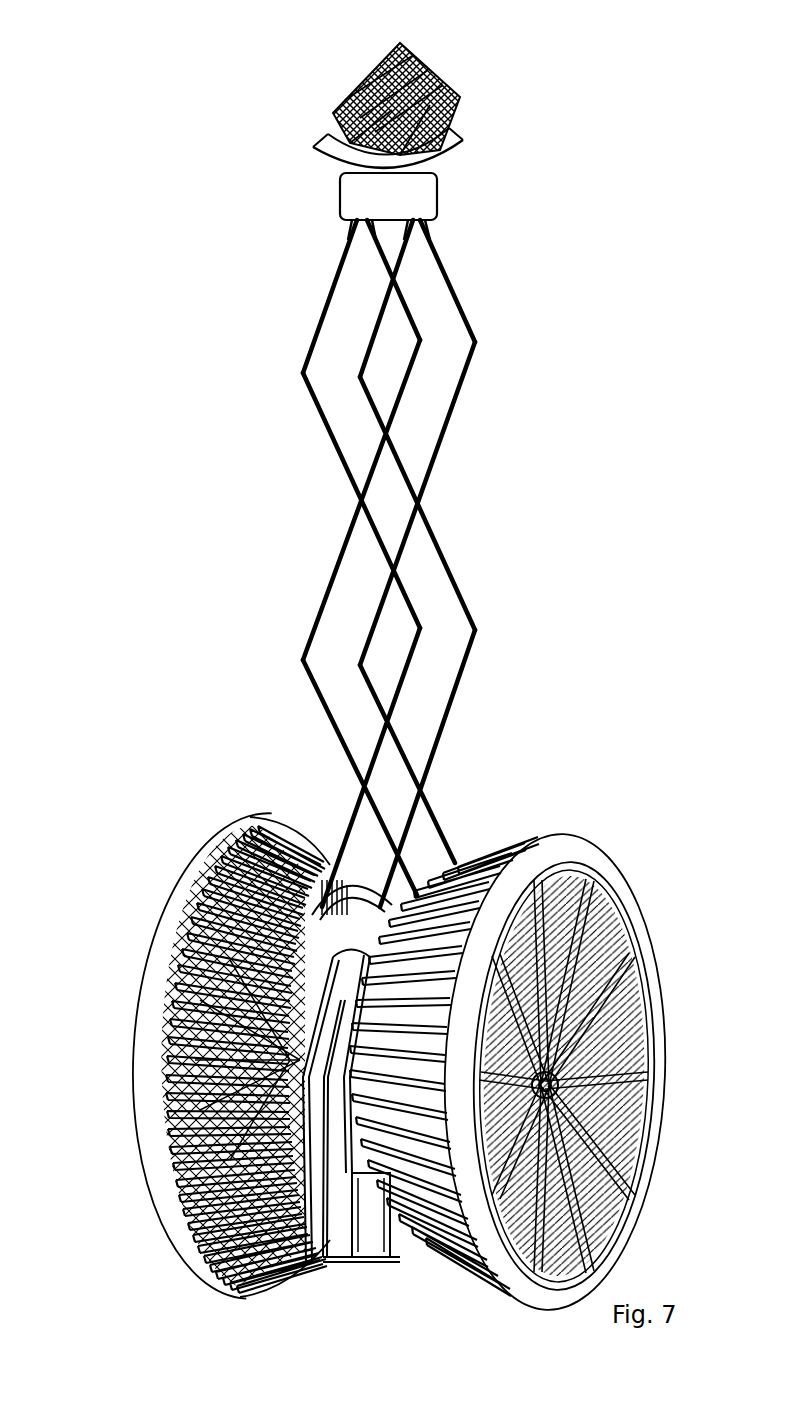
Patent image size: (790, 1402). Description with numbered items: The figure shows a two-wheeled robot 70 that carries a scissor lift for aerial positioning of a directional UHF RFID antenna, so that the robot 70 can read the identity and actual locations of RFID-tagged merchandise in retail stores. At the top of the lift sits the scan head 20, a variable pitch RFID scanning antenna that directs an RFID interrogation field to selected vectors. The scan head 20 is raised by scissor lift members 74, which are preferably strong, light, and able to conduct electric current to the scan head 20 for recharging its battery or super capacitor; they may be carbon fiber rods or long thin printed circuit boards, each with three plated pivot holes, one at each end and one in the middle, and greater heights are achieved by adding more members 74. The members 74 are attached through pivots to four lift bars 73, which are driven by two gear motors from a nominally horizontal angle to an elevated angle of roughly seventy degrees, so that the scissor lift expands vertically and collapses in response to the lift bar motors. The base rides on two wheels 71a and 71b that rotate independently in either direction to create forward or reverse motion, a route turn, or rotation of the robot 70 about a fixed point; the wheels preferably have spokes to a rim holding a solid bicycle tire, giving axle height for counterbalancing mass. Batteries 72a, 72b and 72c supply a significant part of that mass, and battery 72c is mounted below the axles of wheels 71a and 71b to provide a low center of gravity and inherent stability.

The two-wheeled robot 70 is at (152, 123).
The scan head 20 is at (352, 78).
The scissor lift members 74 is at (455, 575).
The wheel 71a is at (210, 855).
The wheel 71b is at (577, 848).
The battery 72a is at (173, 1152).
The battery 72b is at (512, 1158).
The battery 72c is at (372, 1233).
The lift bars 73 is at (330, 1017).